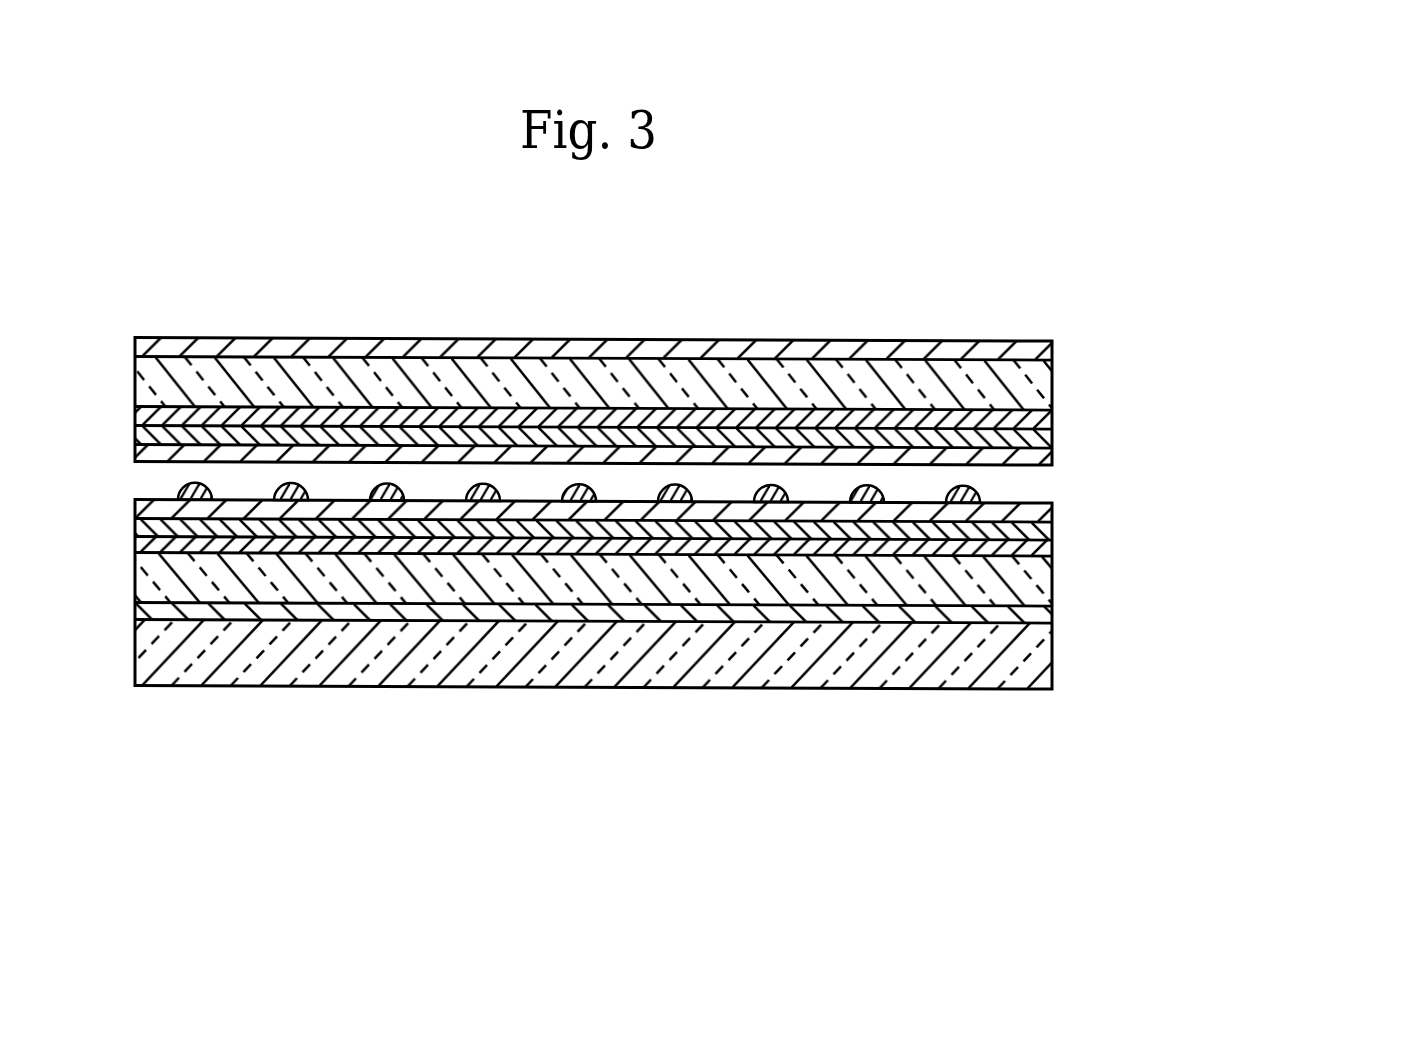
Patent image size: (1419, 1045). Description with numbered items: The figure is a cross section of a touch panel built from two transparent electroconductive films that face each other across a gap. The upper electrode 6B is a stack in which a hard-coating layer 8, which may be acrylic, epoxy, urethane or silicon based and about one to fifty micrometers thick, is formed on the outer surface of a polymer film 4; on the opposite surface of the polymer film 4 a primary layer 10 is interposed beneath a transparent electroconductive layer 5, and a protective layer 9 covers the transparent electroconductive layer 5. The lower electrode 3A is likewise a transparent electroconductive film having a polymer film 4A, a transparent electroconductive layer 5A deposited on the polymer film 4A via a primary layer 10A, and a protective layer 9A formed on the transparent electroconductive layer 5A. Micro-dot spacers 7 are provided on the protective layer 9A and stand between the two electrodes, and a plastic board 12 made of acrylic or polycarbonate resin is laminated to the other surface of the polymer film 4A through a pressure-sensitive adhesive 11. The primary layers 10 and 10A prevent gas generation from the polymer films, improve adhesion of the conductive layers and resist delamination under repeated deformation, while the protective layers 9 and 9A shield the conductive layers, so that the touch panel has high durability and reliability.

The hard-coating layer 8 is at (1053, 342).
The polymer film 4 is at (1033, 380).
The primary layer 10 is at (1040, 416).
The transparent electroconductive layer 5 is at (1037, 440).
The protective layer 9 is at (1040, 453).
The micro-dot spacers 7 is at (183, 488).
The protective layer 9A is at (1044, 510).
The transparent electroconductive layer 5A is at (1036, 531).
The primary layer 10A is at (1041, 550).
The polymer film 4A is at (1038, 589).
The pressure-sensitive adhesive 11 is at (1045, 619).
The plastic board 12 is at (1036, 663).
The upper electrode 6B is at (1225, 390).
The lower electrode 3A is at (1251, 615).